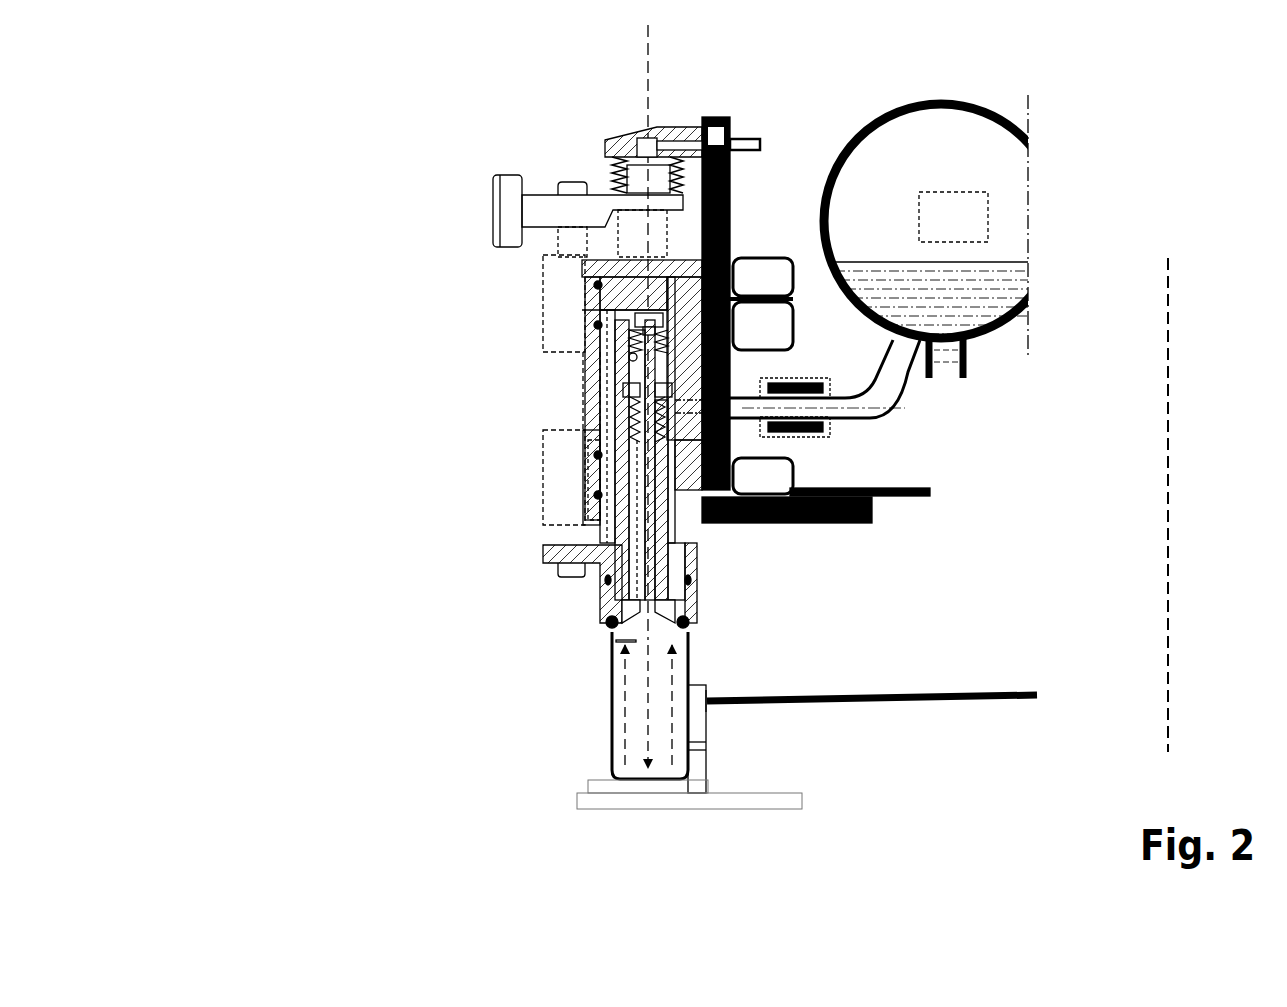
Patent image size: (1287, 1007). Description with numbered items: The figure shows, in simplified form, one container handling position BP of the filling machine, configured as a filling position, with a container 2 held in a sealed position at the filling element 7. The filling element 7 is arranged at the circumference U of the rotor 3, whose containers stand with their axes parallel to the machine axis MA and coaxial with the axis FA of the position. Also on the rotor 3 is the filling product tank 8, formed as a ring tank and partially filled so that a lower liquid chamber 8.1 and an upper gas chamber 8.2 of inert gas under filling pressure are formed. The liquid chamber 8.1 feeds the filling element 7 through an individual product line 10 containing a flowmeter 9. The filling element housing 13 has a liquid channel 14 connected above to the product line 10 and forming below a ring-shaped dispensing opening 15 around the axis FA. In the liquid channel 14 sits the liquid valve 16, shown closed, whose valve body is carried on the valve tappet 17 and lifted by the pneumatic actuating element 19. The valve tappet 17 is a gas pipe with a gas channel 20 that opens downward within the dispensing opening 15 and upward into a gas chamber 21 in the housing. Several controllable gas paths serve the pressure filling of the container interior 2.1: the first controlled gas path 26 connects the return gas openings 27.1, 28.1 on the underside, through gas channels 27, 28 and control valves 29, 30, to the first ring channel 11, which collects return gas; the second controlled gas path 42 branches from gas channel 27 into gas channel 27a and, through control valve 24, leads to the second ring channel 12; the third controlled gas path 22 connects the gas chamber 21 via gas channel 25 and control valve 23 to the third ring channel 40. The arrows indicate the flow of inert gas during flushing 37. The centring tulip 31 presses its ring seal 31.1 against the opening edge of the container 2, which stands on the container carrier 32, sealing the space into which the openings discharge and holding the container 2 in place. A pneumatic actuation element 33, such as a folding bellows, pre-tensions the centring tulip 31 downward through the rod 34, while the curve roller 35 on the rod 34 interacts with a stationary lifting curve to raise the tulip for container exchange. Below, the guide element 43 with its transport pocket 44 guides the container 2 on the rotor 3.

The container 2 is at (644, 671).
The container interior 2.1 is at (657, 700).
The rotor 3 is at (872, 512).
The filling element 7 is at (285, 168).
The filling product tank 8 is at (1037, 150).
The liquid chamber 8.1 is at (975, 315).
The gas chamber 8.2 is at (953, 217).
The flowmeter 9 is at (823, 420).
The product line 10 is at (893, 388).
The first ring channel 11 is at (785, 468).
The second ring channel 12 is at (765, 327).
The filling element housing 13 is at (730, 372).
The liquid channel 14 is at (630, 508).
The dispensing opening 15 is at (612, 627).
The liquid valve 16 is at (698, 597).
The valve tappet 17 is at (626, 470).
The actuating element 19 is at (630, 357).
The gas channel 20 is at (650, 520).
The gas chamber 21 is at (647, 315).
The third controlled gas path 22 is at (560, 292).
The control valve 23 is at (588, 274).
The control valve 24 is at (592, 318).
The gas channel 25 is at (600, 255).
The first controlled gas path 26 is at (588, 507).
The gas channel 27 is at (620, 530).
The gas channel 27a is at (628, 438).
The return gas opening 27.1 is at (615, 603).
The gas channel 28 is at (682, 552).
The return gas opening 28.1 is at (682, 603).
The control valve 29 is at (612, 470).
The control valve 30 is at (565, 493).
The centring tulip 31 is at (597, 580).
The ring seal 31.1 is at (692, 622).
The container carrier 32 is at (630, 805).
The actuation element 33 is at (652, 182).
The rod 34 is at (613, 283).
The curve roller 35 is at (503, 222).
The flow of inert gas during flushing 37 is at (648, 718).
The third ring channel 40 is at (755, 275).
The second controlled gas path 42 is at (614, 378).
The guide element 43 is at (965, 699).
The transport pocket 44 is at (712, 757).
The circumference U is at (712, 708).
The filling element axis FA is at (625, 332).
The machine axis MA is at (1165, 489).
The container handling position BP is at (345, 717).